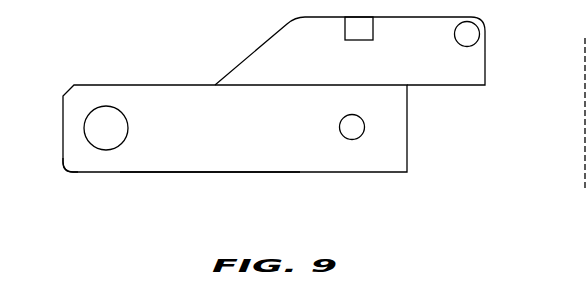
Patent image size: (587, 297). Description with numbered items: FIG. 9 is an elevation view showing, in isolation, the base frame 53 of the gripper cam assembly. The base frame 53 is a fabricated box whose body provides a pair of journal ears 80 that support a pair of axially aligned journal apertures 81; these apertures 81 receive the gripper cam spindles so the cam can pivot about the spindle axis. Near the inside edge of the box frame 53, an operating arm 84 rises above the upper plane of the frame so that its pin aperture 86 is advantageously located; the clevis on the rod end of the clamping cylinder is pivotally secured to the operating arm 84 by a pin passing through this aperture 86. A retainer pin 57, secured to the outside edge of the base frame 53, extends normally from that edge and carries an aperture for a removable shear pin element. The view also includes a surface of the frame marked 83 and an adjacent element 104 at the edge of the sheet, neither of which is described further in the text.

The base frame 53 is at (267, 143).
The operating arm 84 is at (407, 61).
The bottom edge 83 is at (193, 153).
The journal ears 80 is at (70, 163).
The journal apertures 81 is at (107, 122).
The retainer pin 57 is at (352, 130).
The pin aperture 86 is at (472, 33).
The adjacent element 104 is at (573, 132).